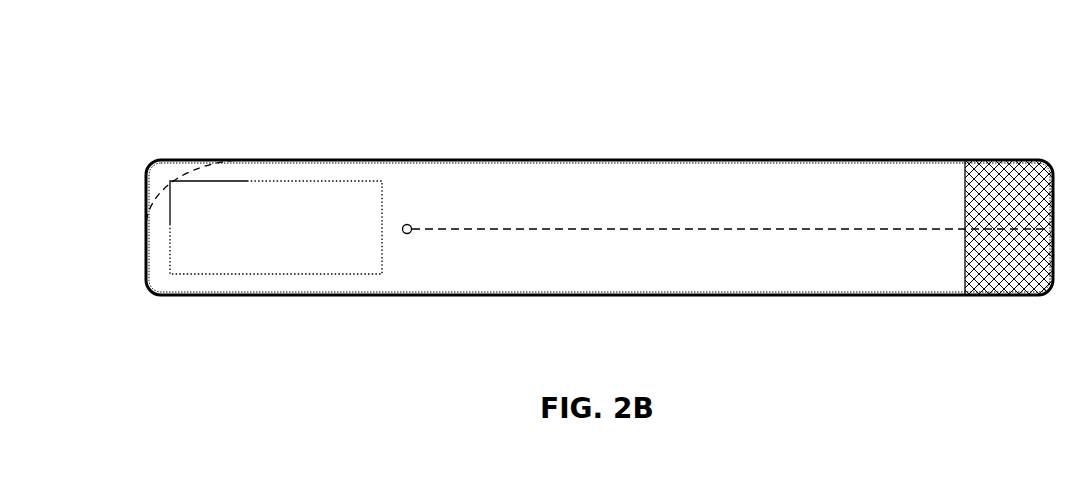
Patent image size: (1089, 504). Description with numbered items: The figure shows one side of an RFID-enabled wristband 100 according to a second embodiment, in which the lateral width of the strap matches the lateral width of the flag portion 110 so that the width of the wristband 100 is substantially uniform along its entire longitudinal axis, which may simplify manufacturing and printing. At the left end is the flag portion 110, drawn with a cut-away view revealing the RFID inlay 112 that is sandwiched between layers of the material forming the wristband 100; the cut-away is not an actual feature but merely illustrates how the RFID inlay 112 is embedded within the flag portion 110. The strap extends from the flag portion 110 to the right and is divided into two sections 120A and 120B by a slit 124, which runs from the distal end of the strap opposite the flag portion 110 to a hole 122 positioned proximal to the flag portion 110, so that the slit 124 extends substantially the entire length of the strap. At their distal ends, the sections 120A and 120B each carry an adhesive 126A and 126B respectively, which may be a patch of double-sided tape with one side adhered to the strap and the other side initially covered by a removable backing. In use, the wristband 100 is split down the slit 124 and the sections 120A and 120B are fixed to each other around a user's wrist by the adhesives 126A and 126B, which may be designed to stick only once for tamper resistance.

The RFID-enabled wristband 100 is at (603, 120).
The flag portion 110 is at (180, 160).
The RFID inlay 112 is at (200, 274).
The section 120A is at (600, 181).
The section 120B is at (600, 280).
The hole 122 is at (409, 233).
The slit 124 is at (682, 229).
The adhesive 126A is at (997, 163).
The adhesive 126B is at (997, 290).